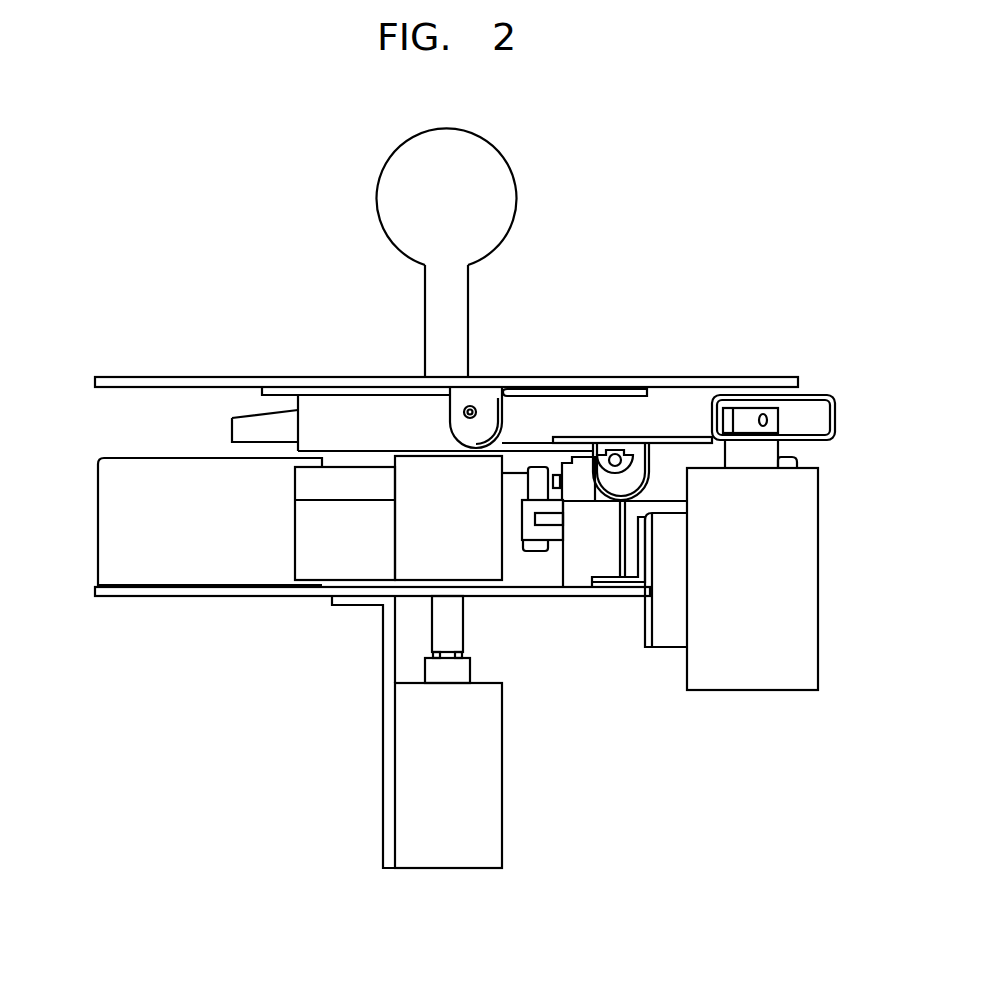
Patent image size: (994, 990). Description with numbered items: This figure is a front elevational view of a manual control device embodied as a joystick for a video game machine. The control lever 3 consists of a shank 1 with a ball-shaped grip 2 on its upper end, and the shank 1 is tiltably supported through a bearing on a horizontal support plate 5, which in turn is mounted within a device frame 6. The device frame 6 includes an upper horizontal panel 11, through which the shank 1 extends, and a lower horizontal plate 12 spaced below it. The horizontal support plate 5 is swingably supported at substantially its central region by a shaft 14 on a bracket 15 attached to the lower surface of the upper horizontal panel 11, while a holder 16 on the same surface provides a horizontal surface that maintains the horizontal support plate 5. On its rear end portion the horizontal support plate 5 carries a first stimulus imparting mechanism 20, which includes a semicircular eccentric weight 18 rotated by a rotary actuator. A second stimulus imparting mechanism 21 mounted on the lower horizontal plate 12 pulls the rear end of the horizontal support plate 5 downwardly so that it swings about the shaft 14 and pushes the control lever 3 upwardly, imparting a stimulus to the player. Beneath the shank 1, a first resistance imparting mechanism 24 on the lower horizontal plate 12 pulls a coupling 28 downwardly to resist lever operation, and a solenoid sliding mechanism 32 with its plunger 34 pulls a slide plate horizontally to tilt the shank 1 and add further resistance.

The shank 1 is at (430, 291).
The ball-shaped grip 2 is at (387, 158).
The control lever 3 is at (489, 277).
The horizontal support plate 5 is at (800, 428).
The device frame 6 is at (170, 354).
The upper horizontal panel 11 is at (123, 377).
The lower horizontal plate 12 is at (158, 598).
The shaft 14 is at (464, 410).
The bracket 15 is at (483, 390).
The holder 16 is at (312, 388).
The semicircular eccentric weight 18 is at (605, 453).
The first stimulus imparting mechanism 20 is at (640, 436).
The second stimulus imparting mechanism 21 is at (682, 661).
The first resistance imparting mechanism 24 is at (507, 766).
The coupling 28 is at (458, 632).
The sliding mechanism 32 is at (127, 462).
The plunger 34 is at (560, 540).